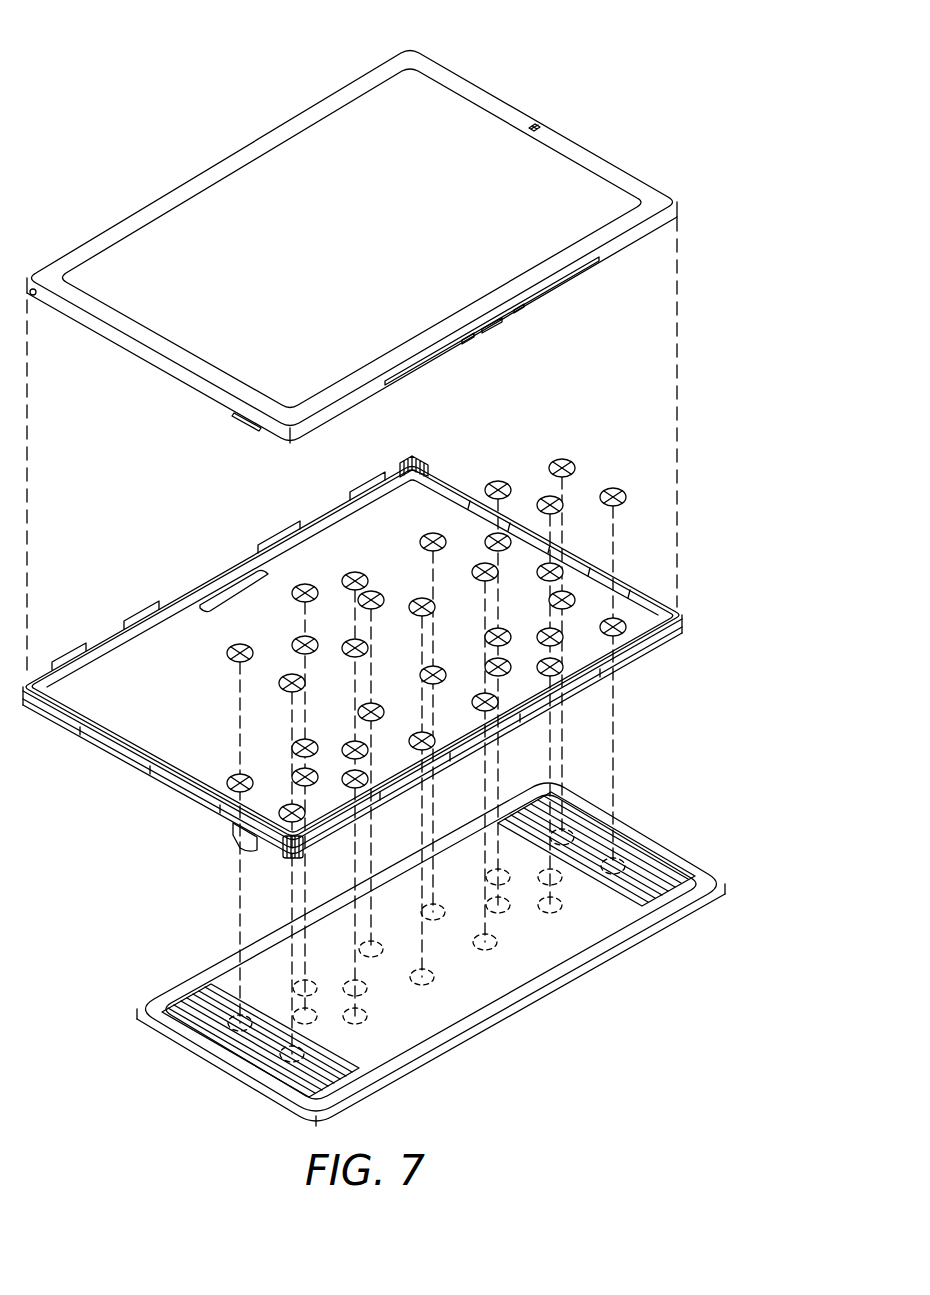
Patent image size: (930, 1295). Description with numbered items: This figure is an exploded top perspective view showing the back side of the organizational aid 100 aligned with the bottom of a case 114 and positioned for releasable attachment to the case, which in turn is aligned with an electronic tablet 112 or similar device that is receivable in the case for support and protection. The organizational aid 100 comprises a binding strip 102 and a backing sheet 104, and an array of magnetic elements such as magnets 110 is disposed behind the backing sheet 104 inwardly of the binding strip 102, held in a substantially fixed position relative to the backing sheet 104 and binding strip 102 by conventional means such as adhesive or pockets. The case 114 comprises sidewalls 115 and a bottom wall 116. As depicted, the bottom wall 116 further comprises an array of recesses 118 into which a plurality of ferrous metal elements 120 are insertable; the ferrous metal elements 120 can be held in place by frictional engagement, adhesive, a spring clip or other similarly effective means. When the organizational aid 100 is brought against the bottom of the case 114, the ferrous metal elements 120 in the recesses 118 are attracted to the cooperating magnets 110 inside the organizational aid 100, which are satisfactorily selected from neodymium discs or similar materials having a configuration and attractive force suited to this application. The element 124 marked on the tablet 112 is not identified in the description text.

The organizational aid 100 is at (645, 832).
The binding strip 102 is at (600, 945).
The backing sheet 104 is at (232, 982).
The magnets 110 is at (435, 980).
The electronic tablet 112 is at (513, 102).
The case 114 is at (267, 540).
The sidewalls 115 is at (403, 462).
The bottom wall 116 is at (165, 743).
The recesses 118 is at (235, 770).
The ferrous metal elements 120 is at (563, 458).
The display screen 124 is at (215, 205).